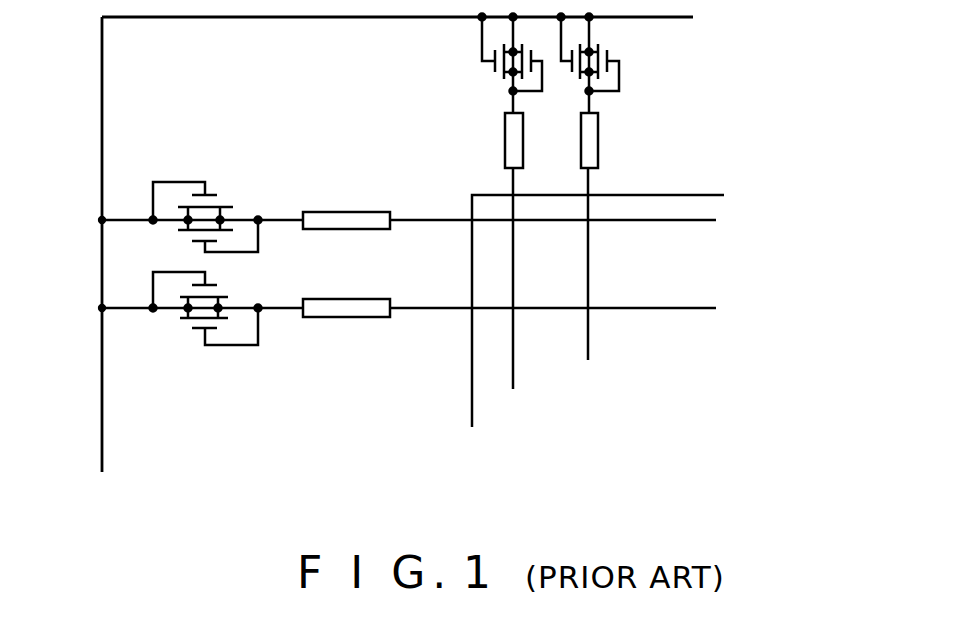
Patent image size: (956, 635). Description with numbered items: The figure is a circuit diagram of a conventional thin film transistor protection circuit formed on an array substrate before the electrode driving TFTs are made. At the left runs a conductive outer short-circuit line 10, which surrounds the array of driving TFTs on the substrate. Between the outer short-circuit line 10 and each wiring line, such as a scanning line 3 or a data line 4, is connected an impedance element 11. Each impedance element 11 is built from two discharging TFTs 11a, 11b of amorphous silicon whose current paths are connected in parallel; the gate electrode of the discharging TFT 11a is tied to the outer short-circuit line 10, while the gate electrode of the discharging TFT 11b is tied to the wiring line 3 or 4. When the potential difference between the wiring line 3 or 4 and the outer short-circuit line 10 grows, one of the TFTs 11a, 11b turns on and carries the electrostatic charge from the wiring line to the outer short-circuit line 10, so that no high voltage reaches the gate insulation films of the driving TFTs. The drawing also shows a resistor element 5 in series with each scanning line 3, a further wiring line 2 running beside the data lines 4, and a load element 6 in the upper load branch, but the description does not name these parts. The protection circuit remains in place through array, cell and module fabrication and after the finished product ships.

The outer short-circuit line 10 is at (102, 176).
The impedance element 11 is at (237, 200).
The discharging TFT 11a is at (215, 292).
The discharging TFT 11b is at (220, 322).
The resistor 5 is at (352, 317).
The scanning line 3 is at (441, 309).
The bit line 2 is at (688, 195).
The data line 4 is at (590, 178).
The load resistor 6 is at (505, 133).